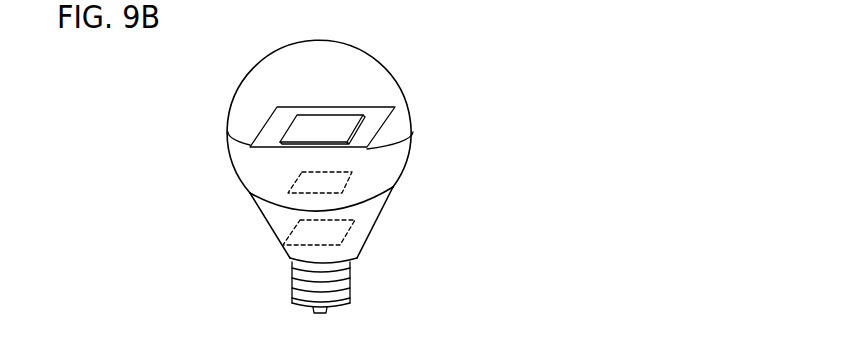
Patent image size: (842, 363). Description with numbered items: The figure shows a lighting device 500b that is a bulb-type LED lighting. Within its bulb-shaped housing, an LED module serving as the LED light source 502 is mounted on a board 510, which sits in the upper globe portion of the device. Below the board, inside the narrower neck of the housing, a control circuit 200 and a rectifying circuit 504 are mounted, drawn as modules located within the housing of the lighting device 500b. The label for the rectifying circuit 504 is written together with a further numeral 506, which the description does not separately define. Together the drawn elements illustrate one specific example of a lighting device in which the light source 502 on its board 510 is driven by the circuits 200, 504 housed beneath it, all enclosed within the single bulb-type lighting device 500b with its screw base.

The lighting device 500b is at (367, 190).
The LED light source 502 is at (333, 125).
The board 510 is at (372, 124).
The control circuit 200 is at (352, 176).
The rectifying circuit 504 is at (395, 233).
The control module 506 is at (355, 223).